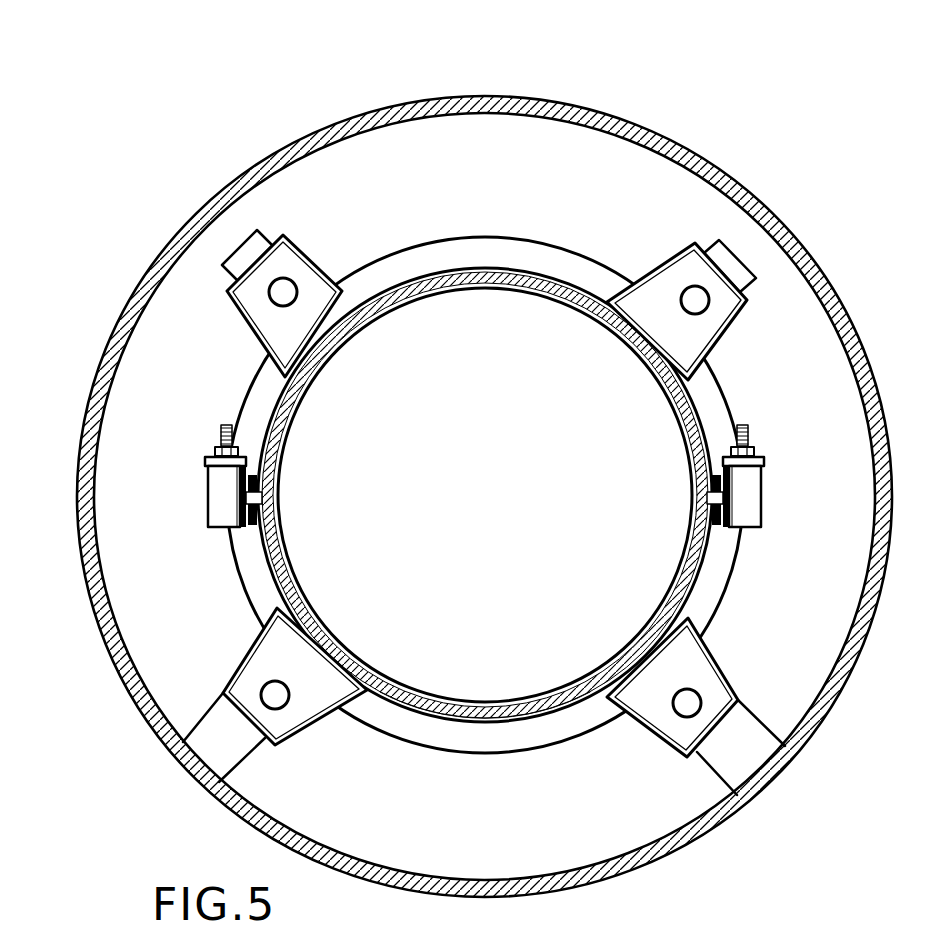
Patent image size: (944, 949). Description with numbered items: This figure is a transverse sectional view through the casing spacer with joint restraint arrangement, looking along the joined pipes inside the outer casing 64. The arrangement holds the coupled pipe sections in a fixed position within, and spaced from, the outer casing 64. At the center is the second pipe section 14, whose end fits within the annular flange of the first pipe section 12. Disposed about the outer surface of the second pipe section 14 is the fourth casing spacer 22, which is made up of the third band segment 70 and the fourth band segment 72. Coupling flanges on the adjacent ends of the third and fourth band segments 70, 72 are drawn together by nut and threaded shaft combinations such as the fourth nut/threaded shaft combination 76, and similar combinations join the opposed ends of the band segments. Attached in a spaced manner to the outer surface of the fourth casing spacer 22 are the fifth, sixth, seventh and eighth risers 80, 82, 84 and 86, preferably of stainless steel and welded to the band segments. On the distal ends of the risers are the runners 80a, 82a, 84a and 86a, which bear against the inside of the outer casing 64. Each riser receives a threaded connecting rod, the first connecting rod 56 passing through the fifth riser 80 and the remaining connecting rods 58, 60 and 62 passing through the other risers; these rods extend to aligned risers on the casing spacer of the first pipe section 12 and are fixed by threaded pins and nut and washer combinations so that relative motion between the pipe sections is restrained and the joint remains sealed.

The outer casing 64 is at (536, 98).
The first pipe section 12 is at (433, 257).
The third band segment 70 is at (520, 272).
The fourth band segment 72 is at (457, 722).
The second pipe section 14 is at (692, 553).
The fourth casing spacer 22 is at (483, 208).
The fifth riser 80 is at (257, 307).
The runner 80a is at (243, 258).
The first connecting rod 56 is at (279, 297).
The eighth riser 86 is at (747, 300).
The runner 86a is at (722, 256).
The connecting rod 60 is at (699, 304).
The sixth riser 82 is at (247, 678).
The runner 82a is at (205, 750).
The connecting rod 58 is at (275, 695).
The seventh riser 84 is at (742, 700).
The runner 84a is at (747, 765).
The connecting rod 62 is at (687, 704).
The fourth nut/threaded shaft combination 76 is at (205, 487).